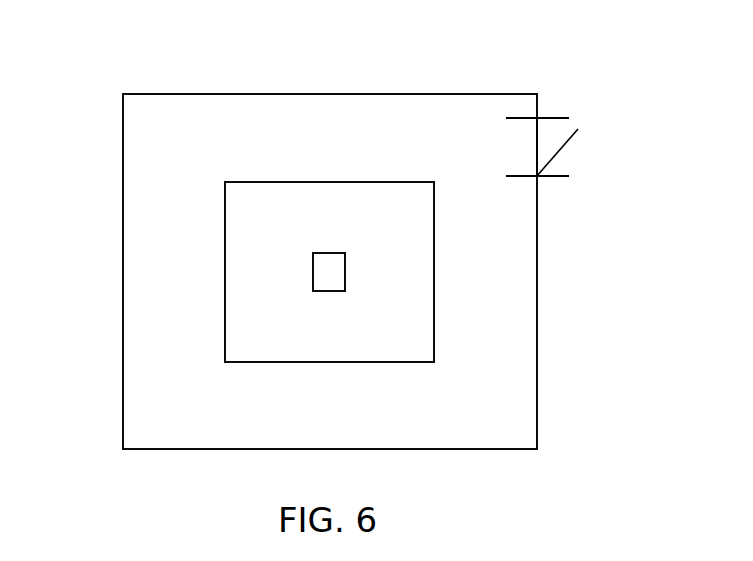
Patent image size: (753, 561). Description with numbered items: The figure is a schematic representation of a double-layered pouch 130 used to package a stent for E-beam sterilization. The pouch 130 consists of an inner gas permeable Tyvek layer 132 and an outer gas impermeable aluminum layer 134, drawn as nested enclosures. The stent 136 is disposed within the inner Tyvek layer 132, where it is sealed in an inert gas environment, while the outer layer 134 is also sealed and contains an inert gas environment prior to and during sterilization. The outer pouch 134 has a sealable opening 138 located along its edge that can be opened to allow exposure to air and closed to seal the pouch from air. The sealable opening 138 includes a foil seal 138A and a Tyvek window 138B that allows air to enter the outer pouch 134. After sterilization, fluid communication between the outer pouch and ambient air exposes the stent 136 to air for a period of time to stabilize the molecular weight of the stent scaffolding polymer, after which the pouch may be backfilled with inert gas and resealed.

The double-layered pouch 130 is at (367, 236).
The inner gas permeable Tyvek layer 132 is at (434, 291).
The outer gas impermeable aluminum layer 134 is at (511, 94).
The stent 136 is at (323, 272).
The sealable opening 138 is at (572, 160).
The foil seal 138A is at (560, 148).
The Tyvek window 138B is at (537, 147).